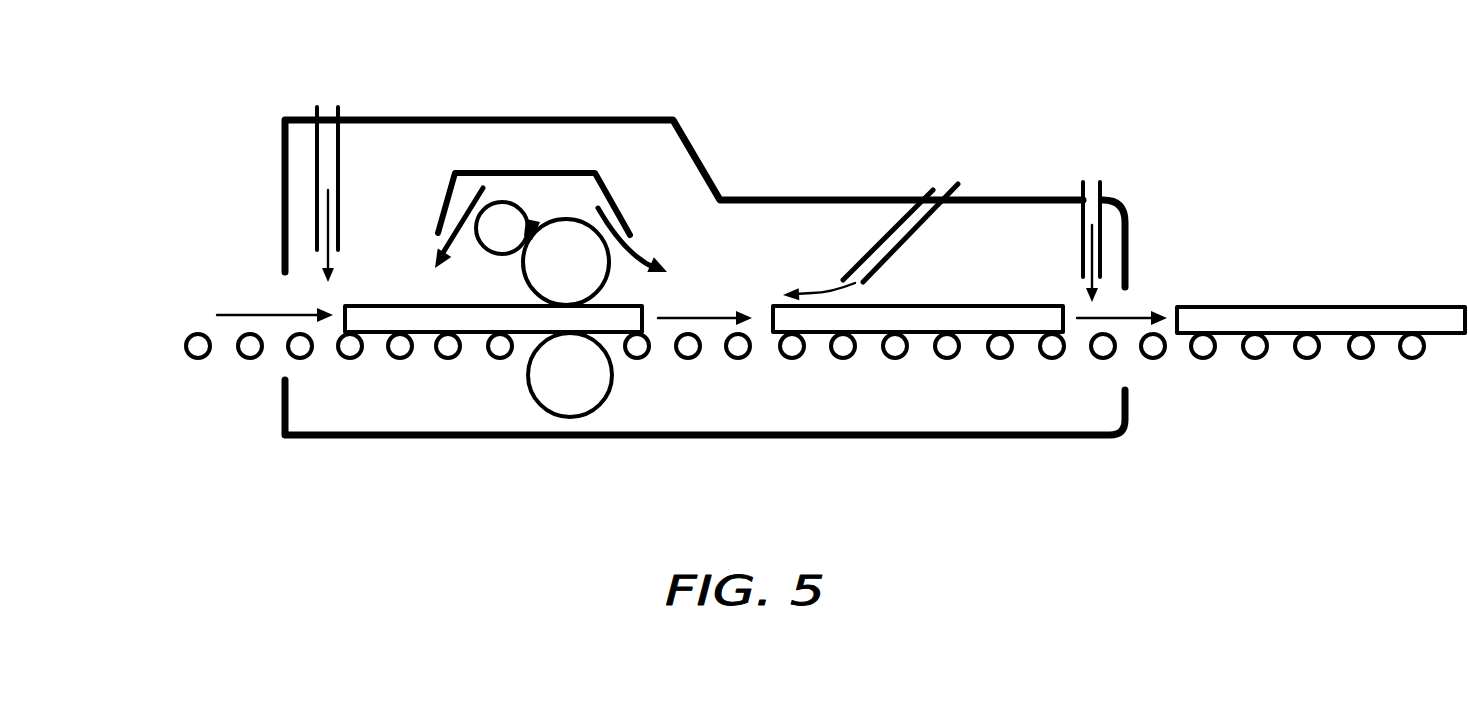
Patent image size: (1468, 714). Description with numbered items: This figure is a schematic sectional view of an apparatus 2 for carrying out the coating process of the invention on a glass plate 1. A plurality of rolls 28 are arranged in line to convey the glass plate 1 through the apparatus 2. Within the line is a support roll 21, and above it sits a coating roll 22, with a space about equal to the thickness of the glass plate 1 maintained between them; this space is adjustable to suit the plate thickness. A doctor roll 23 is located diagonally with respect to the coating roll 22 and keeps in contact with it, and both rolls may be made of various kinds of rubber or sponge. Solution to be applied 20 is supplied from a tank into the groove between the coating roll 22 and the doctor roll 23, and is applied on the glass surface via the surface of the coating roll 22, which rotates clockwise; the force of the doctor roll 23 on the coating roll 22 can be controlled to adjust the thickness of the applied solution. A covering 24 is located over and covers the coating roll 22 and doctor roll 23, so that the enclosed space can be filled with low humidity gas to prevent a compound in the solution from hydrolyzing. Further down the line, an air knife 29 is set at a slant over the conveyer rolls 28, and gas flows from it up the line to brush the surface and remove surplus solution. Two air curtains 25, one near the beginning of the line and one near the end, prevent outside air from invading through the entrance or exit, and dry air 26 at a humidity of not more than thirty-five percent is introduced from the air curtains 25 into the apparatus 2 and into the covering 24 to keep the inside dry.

The substrate / conveyed plate 1 is at (1320, 305).
The processing apparatus 2 is at (251, 121).
The solution to be applied 20 is at (547, 222).
The support roll 21 is at (582, 417).
The coating roll 22 is at (597, 170).
The doctor roll 23 is at (502, 202).
The covering 24 is at (467, 170).
The air curtain 25 is at (315, 113).
The dry air 26 is at (323, 234).
The rolls 28 is at (249, 358).
The air knife 29 is at (927, 183).